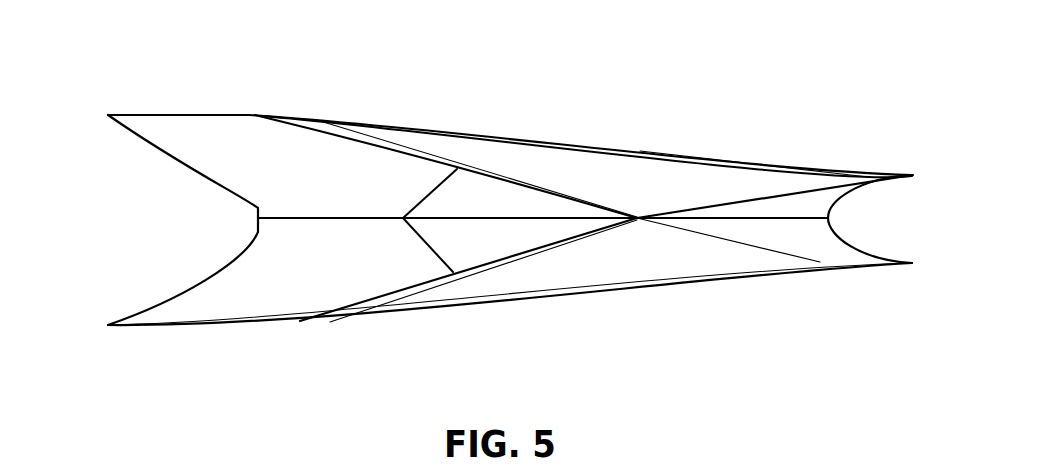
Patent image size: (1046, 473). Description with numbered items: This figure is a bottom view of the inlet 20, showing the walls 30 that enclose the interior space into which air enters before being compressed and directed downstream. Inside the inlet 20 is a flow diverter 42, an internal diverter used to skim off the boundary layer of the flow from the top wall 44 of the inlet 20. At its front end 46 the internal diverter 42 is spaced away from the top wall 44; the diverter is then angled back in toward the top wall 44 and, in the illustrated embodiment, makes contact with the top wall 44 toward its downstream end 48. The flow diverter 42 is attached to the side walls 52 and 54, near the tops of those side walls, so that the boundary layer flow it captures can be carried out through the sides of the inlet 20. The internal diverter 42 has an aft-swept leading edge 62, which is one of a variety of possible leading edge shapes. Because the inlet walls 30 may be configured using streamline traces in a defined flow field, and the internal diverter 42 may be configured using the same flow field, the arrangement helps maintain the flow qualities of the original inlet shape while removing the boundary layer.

The inlet 20 is at (140, 96).
The walls 30 is at (178, 252).
The flow diverter 42 is at (470, 200).
The top wall 44 is at (223, 310).
The front end 46 is at (142, 140).
The downstream end 48 is at (848, 222).
The side wall 52 is at (525, 144).
The side wall 54 is at (513, 300).
The aft-swept leading edge 62 is at (424, 248).